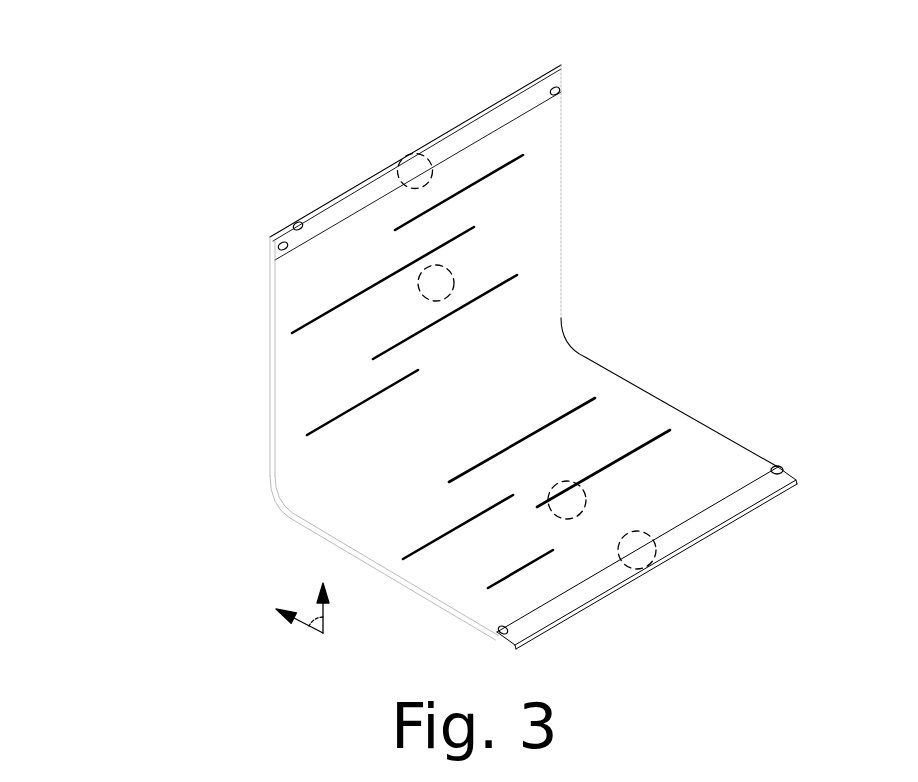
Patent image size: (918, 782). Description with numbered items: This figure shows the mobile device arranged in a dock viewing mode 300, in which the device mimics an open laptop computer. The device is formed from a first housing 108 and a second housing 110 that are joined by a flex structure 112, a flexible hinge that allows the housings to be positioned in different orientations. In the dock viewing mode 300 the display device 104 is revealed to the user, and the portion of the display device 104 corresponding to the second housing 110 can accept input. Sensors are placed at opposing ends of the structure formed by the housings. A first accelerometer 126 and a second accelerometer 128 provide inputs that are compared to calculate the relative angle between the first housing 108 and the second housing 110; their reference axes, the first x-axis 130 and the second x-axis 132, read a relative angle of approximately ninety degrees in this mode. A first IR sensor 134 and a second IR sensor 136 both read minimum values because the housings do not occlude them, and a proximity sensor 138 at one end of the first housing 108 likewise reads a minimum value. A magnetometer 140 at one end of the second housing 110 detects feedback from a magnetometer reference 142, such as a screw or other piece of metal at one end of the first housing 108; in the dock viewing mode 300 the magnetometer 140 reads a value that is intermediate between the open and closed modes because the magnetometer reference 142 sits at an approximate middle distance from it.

The dock viewing mode 300 is at (162, 57).
The display device 104 is at (518, 297).
The first housing 108 is at (270, 366).
The second housing 110 is at (678, 403).
The flex structure 112 is at (278, 511).
The first accelerometer 126 is at (433, 283).
The second accelerometer 128 is at (565, 507).
The first x-axis 130 is at (325, 620).
The second x-axis 132 is at (304, 623).
The first IR sensor 134 is at (560, 85).
The second IR sensor 136 is at (779, 465).
The proximity sensor 138 is at (297, 220).
The magnetometer 140 is at (644, 554).
The magnetometer reference 142 is at (409, 170).